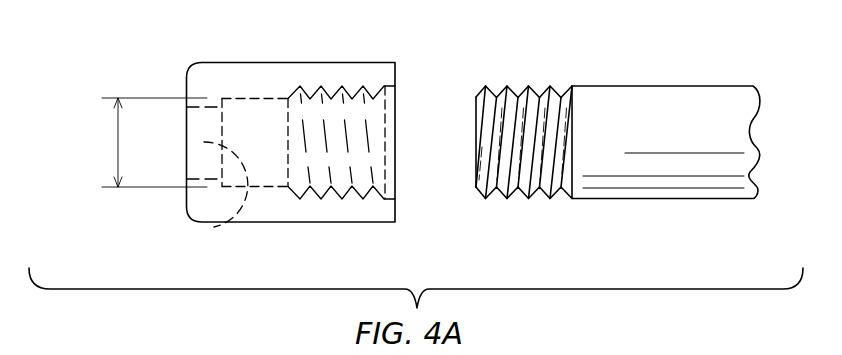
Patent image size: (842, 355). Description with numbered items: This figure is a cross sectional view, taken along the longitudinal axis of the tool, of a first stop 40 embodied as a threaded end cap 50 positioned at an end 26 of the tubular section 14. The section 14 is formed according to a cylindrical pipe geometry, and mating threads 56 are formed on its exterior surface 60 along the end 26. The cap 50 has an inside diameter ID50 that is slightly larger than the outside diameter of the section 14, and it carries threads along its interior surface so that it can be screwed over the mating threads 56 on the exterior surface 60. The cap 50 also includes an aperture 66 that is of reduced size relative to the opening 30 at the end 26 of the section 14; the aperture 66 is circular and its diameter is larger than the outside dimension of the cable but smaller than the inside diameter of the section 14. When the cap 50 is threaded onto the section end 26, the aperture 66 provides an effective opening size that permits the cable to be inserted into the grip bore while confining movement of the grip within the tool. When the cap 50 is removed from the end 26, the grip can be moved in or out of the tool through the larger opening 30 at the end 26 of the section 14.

The section 14 is at (632, 199).
The end 26 is at (547, 74).
The opening 30 is at (476, 170).
The first stop 40 is at (308, 53).
The threaded end cap 50 is at (228, 53).
The mating threads 56 is at (523, 93).
The exterior surface 60 is at (712, 199).
The aperture 66 is at (214, 227).
The inside diameter ID50 is at (118, 140).